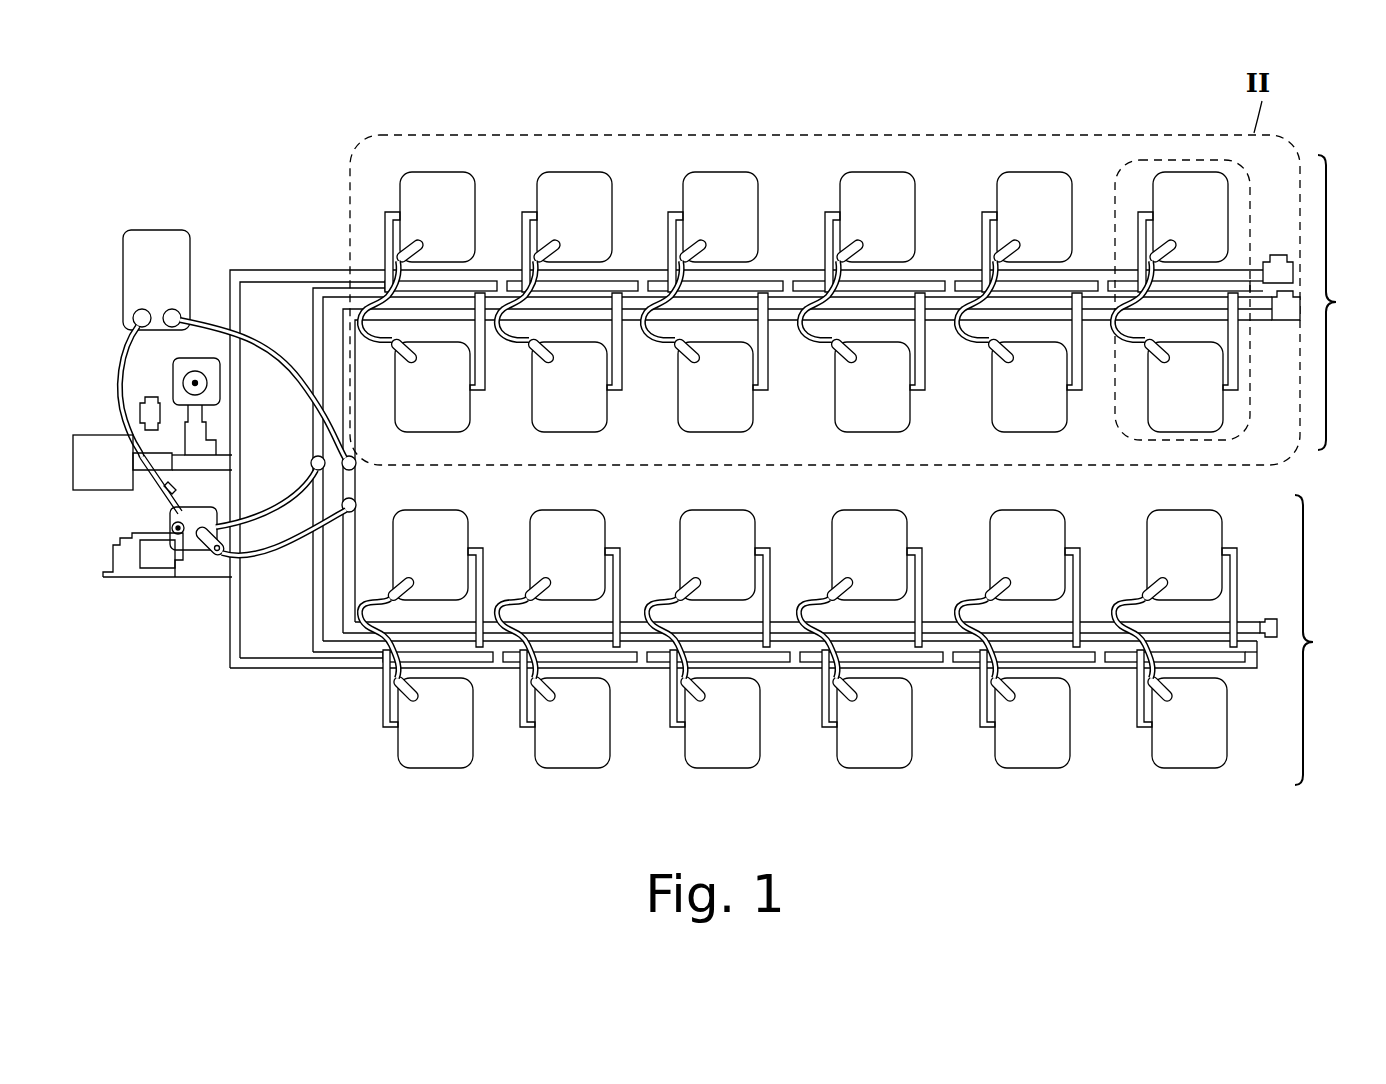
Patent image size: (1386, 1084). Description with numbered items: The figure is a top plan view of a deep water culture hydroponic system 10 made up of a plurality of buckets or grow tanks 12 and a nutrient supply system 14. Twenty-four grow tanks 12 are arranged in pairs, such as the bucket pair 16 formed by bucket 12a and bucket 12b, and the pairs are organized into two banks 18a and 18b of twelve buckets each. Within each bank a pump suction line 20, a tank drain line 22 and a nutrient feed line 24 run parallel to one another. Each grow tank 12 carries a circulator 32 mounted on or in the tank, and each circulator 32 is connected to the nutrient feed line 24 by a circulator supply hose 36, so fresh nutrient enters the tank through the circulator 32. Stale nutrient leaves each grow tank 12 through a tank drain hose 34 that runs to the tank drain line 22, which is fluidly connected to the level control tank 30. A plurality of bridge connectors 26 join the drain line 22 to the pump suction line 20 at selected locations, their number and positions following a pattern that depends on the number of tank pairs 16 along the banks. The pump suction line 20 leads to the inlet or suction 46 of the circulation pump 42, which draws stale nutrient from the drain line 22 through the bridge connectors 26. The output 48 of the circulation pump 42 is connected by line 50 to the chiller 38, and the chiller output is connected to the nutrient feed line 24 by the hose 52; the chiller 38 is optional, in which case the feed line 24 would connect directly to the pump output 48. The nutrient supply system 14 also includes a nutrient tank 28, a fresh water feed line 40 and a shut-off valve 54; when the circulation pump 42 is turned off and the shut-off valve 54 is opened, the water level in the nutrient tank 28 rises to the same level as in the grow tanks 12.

The deep water culture hydroponic system 10 is at (205, 801).
The grow tank 12 is at (810, 470).
The bucket 12a is at (1178, 229).
The bucket 12b is at (1173, 399).
The nutrient supply system 14 is at (188, 653).
The bucket pair 16 is at (1252, 208).
The bank 18a is at (1352, 302).
The bank 18b is at (1328, 640).
The pump suction line 20 is at (268, 269).
The tank drain line 22 is at (637, 290).
The nutrient feed line 24 is at (355, 445).
The bridge connector 26 is at (497, 283).
The nutrient tank 28 is at (178, 368).
The level control tank 30 is at (183, 560).
The circulator 32 is at (986, 366).
The tank drain hose 34 is at (1080, 392).
The circulator supply hose 36 is at (512, 345).
The chiller 38 is at (153, 243).
The fresh water feed line 40 is at (118, 578).
The circulation pump 42 is at (73, 465).
The inlet or suction 46 is at (163, 468).
The output 48 is at (135, 462).
The line 50 is at (122, 373).
The hose 52 is at (287, 352).
The shut-off valve 54 is at (212, 436).